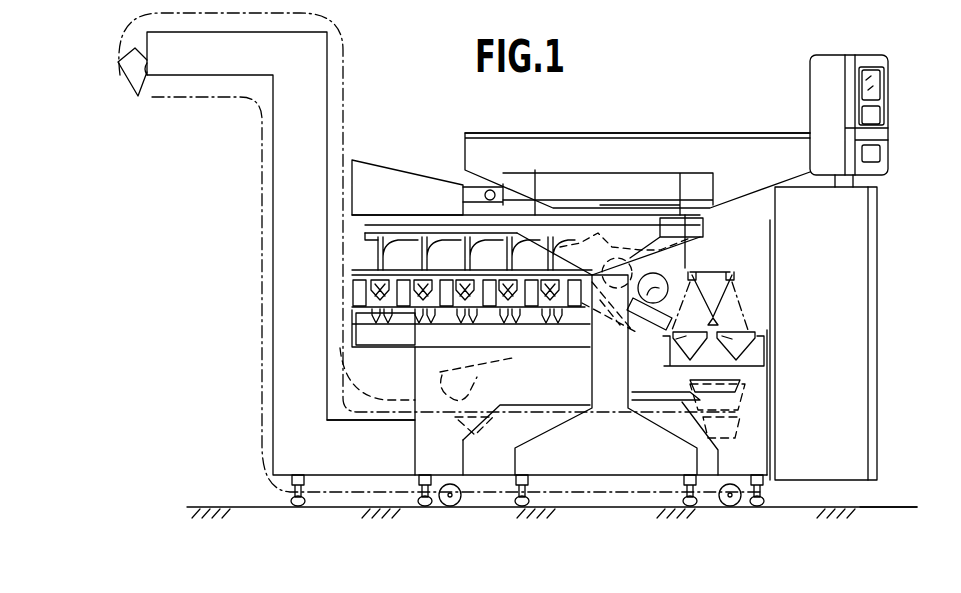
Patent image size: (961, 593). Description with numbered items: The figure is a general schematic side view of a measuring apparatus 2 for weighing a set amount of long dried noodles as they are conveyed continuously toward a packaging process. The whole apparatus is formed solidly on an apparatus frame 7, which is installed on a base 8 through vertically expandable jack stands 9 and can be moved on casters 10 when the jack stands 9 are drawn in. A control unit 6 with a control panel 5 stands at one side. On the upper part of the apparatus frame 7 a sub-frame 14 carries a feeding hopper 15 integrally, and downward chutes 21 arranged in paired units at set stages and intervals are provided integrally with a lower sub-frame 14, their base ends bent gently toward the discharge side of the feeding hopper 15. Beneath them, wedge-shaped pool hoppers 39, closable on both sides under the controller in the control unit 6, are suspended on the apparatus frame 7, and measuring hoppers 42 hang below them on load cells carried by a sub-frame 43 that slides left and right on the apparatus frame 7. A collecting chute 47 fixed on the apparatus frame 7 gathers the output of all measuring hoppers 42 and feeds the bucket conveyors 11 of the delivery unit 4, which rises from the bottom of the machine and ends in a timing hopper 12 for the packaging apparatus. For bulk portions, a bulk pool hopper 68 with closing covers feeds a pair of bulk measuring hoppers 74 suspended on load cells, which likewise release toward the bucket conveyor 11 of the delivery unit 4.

The measuring apparatus 2 is at (218, 219).
The delivery unit 4 is at (345, 92).
The control panel 5 is at (888, 140).
The control unit 6 is at (871, 251).
The apparatus frame 7 is at (376, 330).
The base 8 is at (877, 509).
The jack stand 9 is at (766, 495).
The caster 10 is at (424, 476).
The bucket conveyor 11 is at (732, 425).
The timing hopper 12 is at (138, 99).
The sub-frame 14 is at (448, 265).
The feeding hopper 15 is at (757, 136).
The downward chute 21 is at (376, 257).
The pool hopper 39 is at (376, 283).
The measuring hopper 42 is at (416, 360).
The sub-frame 43 is at (376, 306).
The collecting chute 47 is at (505, 360).
The bulk pool hopper 68 is at (712, 292).
The bulk measuring hopper 74 is at (768, 350).